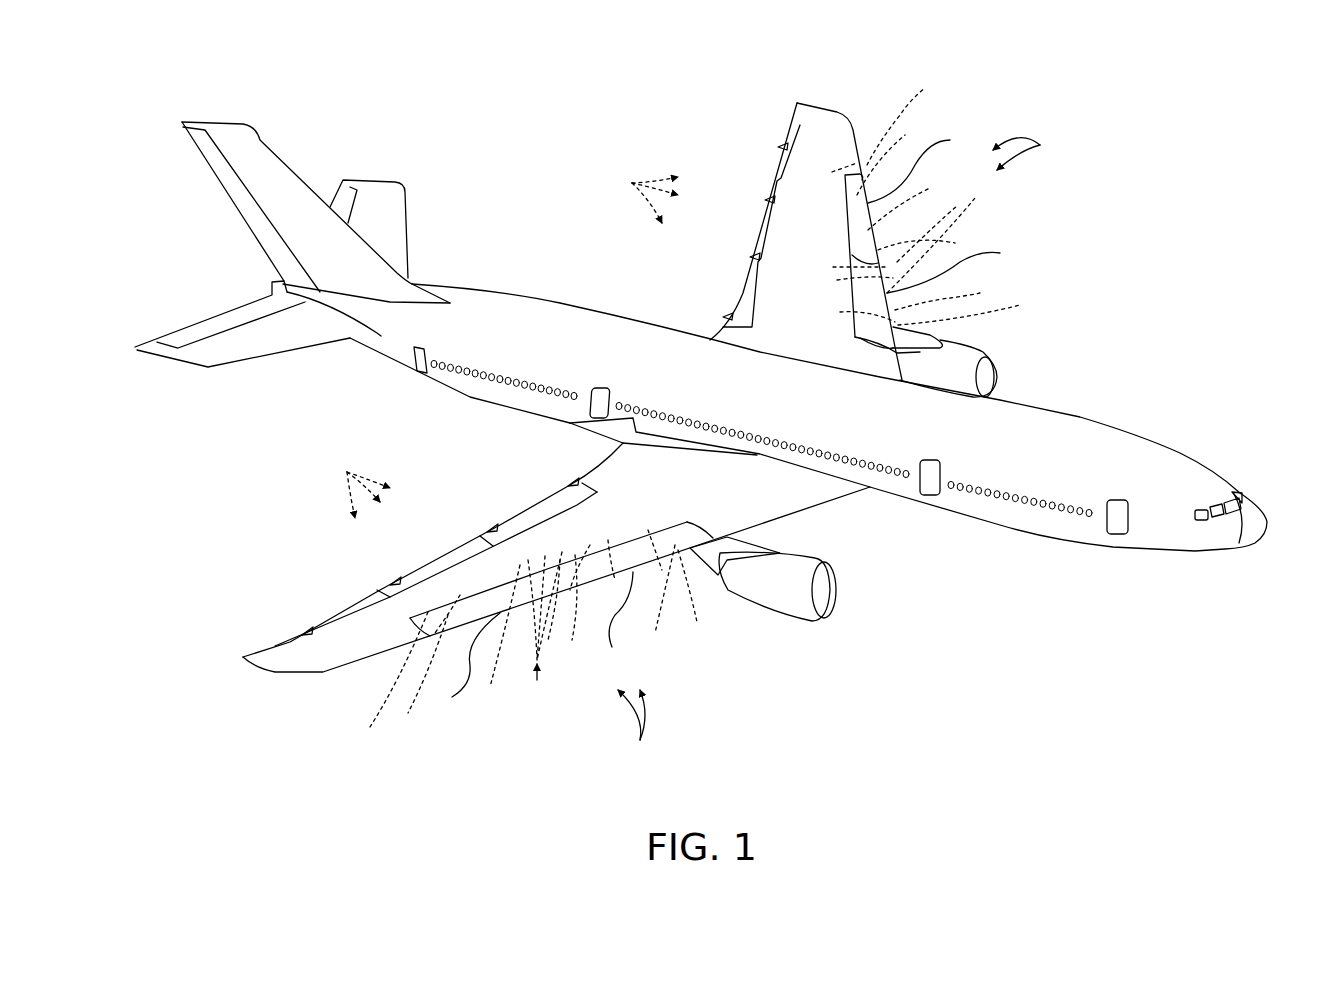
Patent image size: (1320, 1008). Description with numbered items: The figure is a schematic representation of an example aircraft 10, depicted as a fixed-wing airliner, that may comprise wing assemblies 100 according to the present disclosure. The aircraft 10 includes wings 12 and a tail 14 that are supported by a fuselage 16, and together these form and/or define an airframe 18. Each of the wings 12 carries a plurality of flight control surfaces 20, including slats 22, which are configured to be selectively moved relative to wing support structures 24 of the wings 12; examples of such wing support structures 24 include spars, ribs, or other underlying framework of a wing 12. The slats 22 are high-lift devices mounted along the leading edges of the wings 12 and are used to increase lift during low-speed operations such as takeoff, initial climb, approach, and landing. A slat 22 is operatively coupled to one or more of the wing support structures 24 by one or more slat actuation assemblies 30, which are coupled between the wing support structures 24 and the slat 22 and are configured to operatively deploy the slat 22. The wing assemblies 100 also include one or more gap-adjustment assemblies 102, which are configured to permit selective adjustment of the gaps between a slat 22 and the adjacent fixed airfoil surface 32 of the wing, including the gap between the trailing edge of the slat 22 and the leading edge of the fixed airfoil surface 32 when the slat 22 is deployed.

The aircraft 10 is at (1130, 124).
The wings 12 is at (858, 134).
The tail 14 is at (280, 152).
The fuselage 16 is at (1083, 418).
The airframe 18 is at (1045, 248).
The flight control surfaces 20 is at (503, 346).
The slats 22 is at (735, 428).
The wing support structures 24 is at (764, 444).
The slat actuation assemblies 30 is at (704, 409).
The fixed airfoil surface 32 is at (665, 432).
The wing assemblies 100 is at (850, 448).
The gap-adjustment assemblies 102 is at (710, 437).